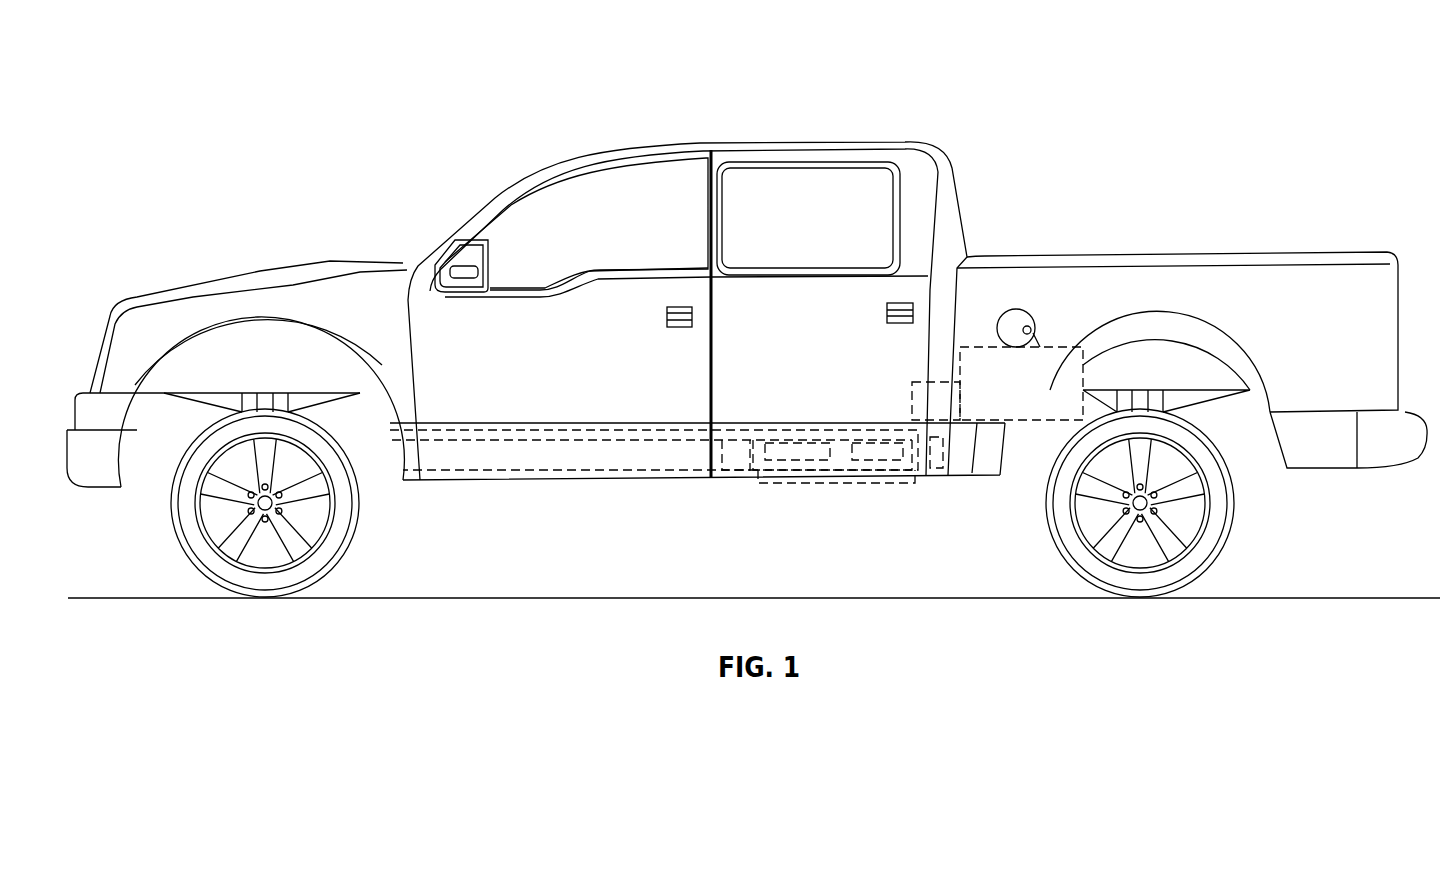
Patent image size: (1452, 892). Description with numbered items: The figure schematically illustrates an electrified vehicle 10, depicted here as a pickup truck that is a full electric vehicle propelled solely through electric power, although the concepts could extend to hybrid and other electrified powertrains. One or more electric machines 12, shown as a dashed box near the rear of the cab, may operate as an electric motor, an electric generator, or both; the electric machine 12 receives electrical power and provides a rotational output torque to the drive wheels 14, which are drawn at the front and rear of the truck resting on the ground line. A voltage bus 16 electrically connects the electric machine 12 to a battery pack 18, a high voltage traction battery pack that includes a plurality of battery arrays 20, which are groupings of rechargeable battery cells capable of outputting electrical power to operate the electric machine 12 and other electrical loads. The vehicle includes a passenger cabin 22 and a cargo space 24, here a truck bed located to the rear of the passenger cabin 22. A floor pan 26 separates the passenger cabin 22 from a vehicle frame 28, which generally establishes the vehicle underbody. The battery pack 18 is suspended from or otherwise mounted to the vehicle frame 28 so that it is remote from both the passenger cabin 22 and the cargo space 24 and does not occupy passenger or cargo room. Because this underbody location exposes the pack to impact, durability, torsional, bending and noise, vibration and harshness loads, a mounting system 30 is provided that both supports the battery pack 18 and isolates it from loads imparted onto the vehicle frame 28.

The electrified vehicle 10 is at (753, 359).
The electric machine 12 is at (1045, 347).
The drive wheels 14 is at (248, 580).
The voltage bus 16 is at (910, 402).
The battery pack 18 is at (838, 447).
The battery arrays 20 is at (810, 453).
The passenger cabin 22 is at (633, 193).
The cargo space 24 is at (1180, 253).
The floor pan 26 is at (560, 432).
The vehicle frame 28 is at (507, 450).
The mounting system 30 is at (752, 487).